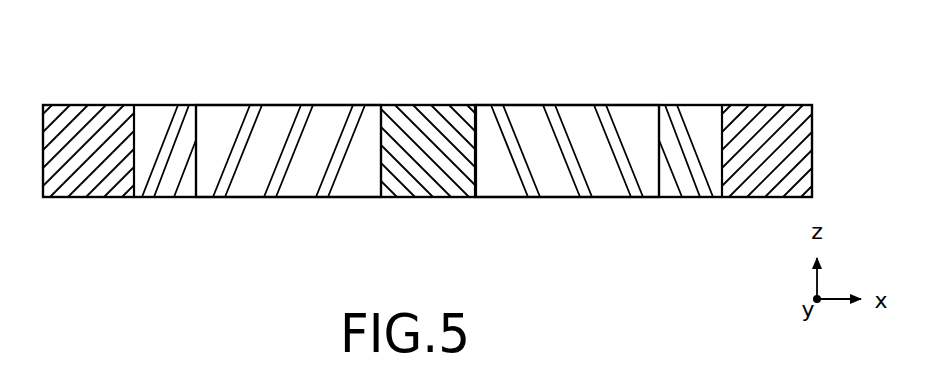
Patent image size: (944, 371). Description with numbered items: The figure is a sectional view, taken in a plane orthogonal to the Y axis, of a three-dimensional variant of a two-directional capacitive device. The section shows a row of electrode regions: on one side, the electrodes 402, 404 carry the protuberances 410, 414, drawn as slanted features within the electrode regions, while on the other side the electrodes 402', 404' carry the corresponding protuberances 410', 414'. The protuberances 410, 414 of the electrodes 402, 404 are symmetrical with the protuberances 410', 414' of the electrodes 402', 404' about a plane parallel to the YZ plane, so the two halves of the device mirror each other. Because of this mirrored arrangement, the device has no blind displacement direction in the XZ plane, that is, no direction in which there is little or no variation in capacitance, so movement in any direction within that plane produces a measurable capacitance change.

The electrode 402 is at (129, 109).
The electrode 402' is at (754, 109).
The electrode 404 is at (288, 109).
The electrode 404' is at (567, 109).
The protuberance 410 is at (172, 189).
The protuberance 410' is at (692, 189).
The protuberance 414 is at (289, 189).
The protuberance 414' is at (567, 189).